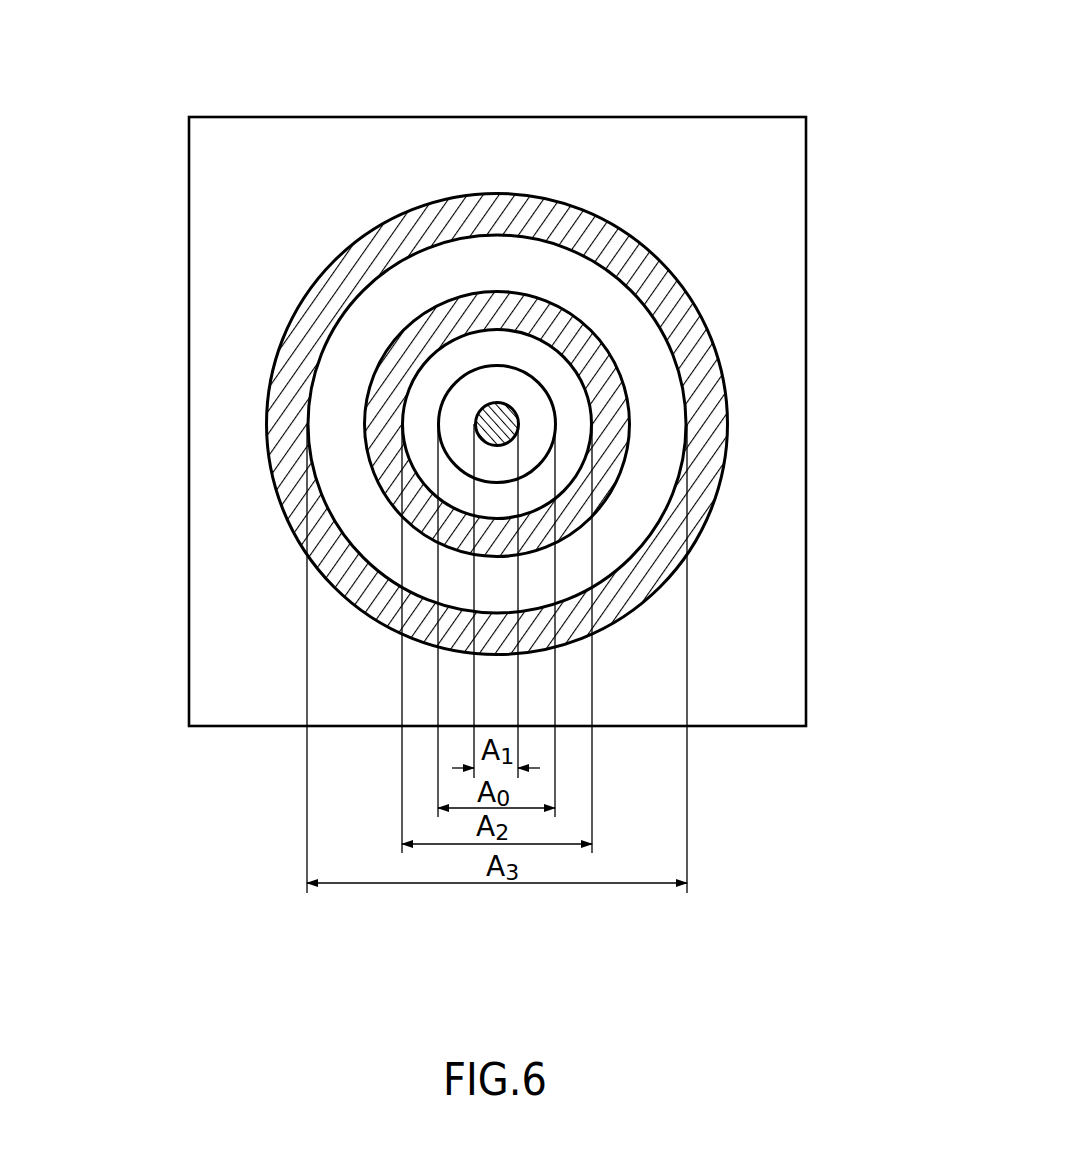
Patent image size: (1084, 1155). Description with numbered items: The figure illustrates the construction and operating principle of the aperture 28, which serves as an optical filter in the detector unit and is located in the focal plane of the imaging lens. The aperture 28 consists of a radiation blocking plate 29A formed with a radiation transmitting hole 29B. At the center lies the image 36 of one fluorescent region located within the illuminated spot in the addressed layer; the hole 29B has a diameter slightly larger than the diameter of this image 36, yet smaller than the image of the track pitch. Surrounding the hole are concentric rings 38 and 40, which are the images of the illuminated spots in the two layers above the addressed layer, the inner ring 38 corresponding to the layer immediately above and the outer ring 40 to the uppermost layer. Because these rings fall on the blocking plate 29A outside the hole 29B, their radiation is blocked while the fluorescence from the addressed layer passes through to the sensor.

The aperture 28 is at (485, 372).
The radiation blocking plate 29A is at (536, 396).
The radiation transmitting hole 29B is at (234, 197).
The image of one fluorescent region 36 is at (520, 412).
The ring 38 is at (563, 337).
The ring 40 is at (412, 213).